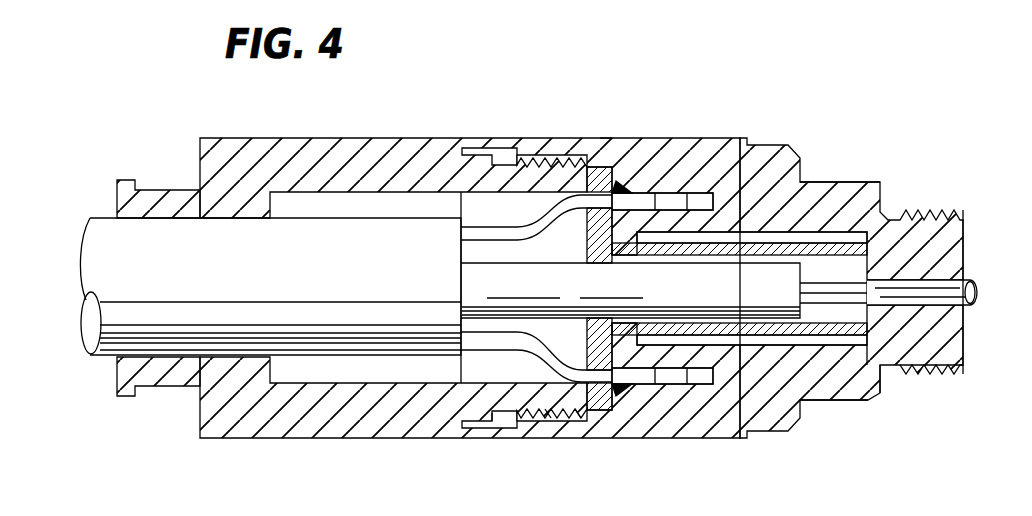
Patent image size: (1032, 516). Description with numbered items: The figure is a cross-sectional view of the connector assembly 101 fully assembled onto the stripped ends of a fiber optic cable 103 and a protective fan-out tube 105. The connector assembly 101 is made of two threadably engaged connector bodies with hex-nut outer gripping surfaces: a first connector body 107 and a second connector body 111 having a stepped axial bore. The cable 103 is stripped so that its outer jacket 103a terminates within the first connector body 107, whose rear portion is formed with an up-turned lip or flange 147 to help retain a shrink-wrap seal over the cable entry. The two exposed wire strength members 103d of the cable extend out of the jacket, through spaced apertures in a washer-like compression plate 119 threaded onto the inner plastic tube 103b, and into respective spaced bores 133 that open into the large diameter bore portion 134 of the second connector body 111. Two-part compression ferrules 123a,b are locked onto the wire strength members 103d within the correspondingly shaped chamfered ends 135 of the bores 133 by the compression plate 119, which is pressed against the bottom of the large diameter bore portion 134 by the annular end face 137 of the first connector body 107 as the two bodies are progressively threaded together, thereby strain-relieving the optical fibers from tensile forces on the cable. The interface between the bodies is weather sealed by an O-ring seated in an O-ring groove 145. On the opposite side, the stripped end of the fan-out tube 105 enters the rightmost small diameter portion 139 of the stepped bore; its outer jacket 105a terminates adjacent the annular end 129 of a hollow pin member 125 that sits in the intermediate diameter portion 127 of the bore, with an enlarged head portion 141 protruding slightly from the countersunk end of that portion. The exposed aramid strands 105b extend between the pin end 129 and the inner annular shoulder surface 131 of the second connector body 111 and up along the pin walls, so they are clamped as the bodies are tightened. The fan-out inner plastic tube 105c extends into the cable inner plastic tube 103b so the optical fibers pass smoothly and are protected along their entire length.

The connector assembly 101 is at (258, 114).
The fiber optic cable 103 is at (95, 210).
The outer jacket 103a is at (295, 358).
The inner plastic tube 103b is at (745, 320).
The wire strength members 103d is at (467, 220).
The fan-out tube 105 is at (968, 270).
The outer jacket 105a is at (902, 277).
The aramid strands 105b is at (805, 225).
The inner plastic tube 105c is at (835, 255).
The first connector body 107 is at (385, 441).
The second connector body 111 is at (607, 134).
The compression plate 119 is at (587, 166).
The compression ferrules 123a,b is at (622, 190).
The pin member 125 is at (768, 180).
The intermediate diameter portion 127 is at (730, 243).
The annular end 129 is at (868, 355).
The inner annular shoulder surface 131 is at (880, 368).
The spaced bores 133 is at (700, 228).
The large diameter bore portion 134 is at (537, 190).
The chamfered ends 135 is at (655, 193).
The annular end face 137 is at (552, 430).
The small diameter portion 139 is at (937, 374).
The head portion 141 is at (578, 395).
The O-ring groove 145 is at (498, 416).
The flange 147 is at (125, 397).